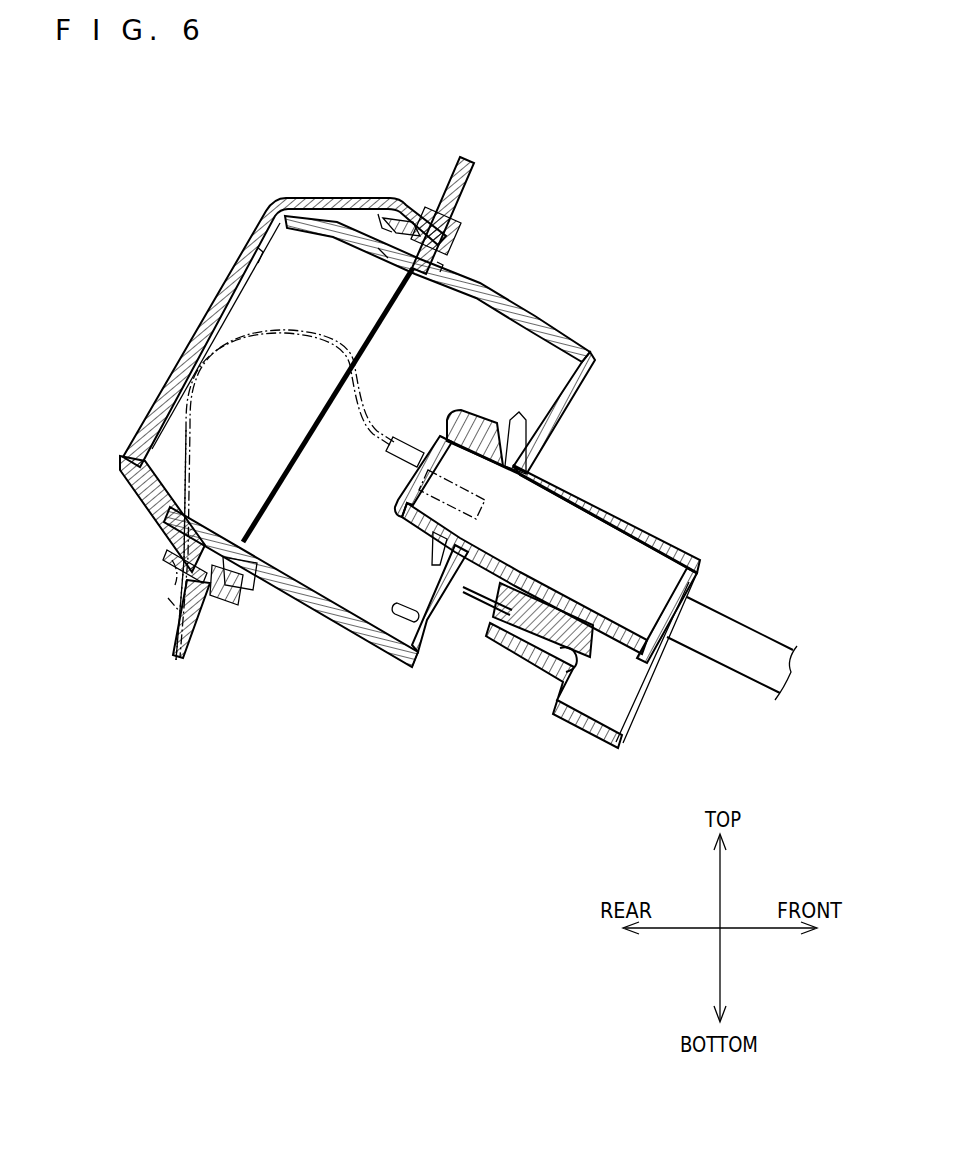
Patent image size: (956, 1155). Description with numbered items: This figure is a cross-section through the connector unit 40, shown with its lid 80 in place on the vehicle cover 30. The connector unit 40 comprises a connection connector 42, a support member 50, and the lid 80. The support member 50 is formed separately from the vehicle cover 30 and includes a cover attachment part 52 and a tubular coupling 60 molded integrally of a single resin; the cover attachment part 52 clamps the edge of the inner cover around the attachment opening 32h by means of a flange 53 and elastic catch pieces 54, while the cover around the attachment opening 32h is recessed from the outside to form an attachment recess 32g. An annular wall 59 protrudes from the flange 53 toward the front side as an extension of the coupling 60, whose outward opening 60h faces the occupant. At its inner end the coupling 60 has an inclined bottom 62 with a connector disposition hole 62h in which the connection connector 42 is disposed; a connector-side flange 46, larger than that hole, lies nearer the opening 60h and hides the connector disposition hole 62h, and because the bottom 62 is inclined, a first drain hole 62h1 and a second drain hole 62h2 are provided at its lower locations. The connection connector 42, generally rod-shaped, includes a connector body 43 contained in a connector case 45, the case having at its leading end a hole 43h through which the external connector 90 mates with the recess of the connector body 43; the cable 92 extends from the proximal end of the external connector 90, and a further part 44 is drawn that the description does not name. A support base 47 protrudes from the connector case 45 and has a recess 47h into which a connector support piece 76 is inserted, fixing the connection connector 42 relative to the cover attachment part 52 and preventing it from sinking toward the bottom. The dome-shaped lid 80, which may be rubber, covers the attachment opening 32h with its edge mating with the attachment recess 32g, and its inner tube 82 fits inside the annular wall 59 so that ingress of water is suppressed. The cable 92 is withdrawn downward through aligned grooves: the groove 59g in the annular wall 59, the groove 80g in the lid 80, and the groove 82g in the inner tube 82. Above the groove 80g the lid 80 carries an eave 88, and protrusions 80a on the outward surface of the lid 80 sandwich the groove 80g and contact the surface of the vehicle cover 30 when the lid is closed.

The connector unit 40 is at (122, 228).
The lid 80 is at (240, 250).
The coupling 60 is at (520, 304).
The annular wall 59 is at (358, 200).
The outward opening of the coupling 60h is at (382, 252).
The cover attachment part 52 is at (396, 222).
The flange 53 is at (408, 206).
The vehicle cover 30 is at (472, 160).
The attachment recess 32g is at (458, 230).
The attachment opening 32h is at (445, 264).
The support member 50 is at (583, 333).
The inclined bottom 62 is at (578, 392).
The connector disposition hole 62h is at (538, 476).
The connector body 43 is at (600, 516).
The connector case 45 is at (657, 545).
The connection connector 42 is at (478, 404).
The connector-side flange 46 is at (522, 414).
The hole 43h is at (420, 470).
The external connector 90 is at (414, 438).
The shaft / cable 44 is at (732, 630).
The support base 47 is at (505, 645).
The recess 47h is at (547, 655).
The connector support piece 76 is at (588, 660).
The first drain hole 62h1 is at (410, 660).
The second drain hole 62h2 is at (400, 610).
The groove of the annular wall 59g is at (222, 545).
The inner tube 82 is at (158, 518).
The groove of the lid 80g is at (172, 526).
The elastic catch piece 54 is at (248, 605).
The protrusions 80a is at (182, 628).
The groove of the inner tube 82g is at (196, 508).
The eave 88 is at (172, 574).
The cable 92 is at (170, 603).